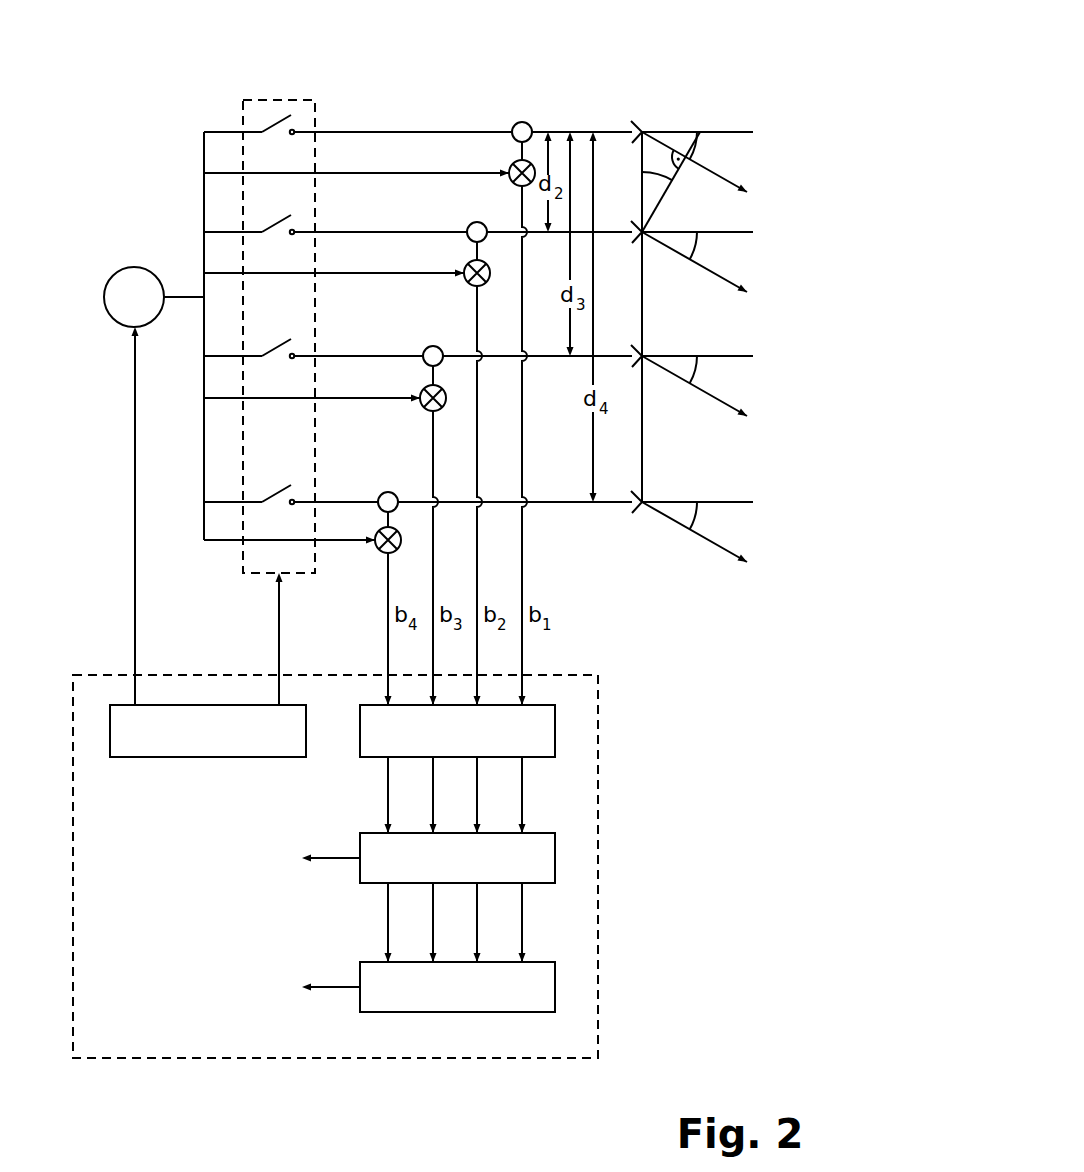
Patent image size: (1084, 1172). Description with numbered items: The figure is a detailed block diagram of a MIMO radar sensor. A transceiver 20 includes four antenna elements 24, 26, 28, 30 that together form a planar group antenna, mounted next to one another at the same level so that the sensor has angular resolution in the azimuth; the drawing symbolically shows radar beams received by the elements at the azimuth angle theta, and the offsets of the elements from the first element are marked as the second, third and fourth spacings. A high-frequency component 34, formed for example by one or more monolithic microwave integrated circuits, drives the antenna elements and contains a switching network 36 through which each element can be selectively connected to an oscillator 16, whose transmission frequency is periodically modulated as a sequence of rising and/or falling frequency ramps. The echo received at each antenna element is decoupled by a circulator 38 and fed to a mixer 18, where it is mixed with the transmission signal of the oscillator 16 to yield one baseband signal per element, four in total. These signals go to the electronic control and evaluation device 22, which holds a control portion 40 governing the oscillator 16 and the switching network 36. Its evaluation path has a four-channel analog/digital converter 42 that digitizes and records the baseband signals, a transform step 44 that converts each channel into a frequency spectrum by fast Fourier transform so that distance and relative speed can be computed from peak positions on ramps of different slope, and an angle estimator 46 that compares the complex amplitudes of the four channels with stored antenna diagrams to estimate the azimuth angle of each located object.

The oscillator 16 is at (137, 268).
The mixer 18 is at (509, 178).
The transceiver 20 is at (641, 103).
The control and evaluation device 22 is at (602, 795).
The antenna element 24 is at (631, 122).
The antenna element 26 is at (636, 226).
The antenna element 28 is at (636, 349).
The antenna element 30 is at (636, 495).
The high-frequency component 34 is at (430, 101).
The switching network 36 is at (280, 100).
The circulator 38 is at (522, 122).
The control portion 40 is at (206, 757).
The four-channel analog/digital converter 42 is at (362, 742).
The transform step 44 is at (362, 870).
The angle estimator 46 is at (362, 1000).